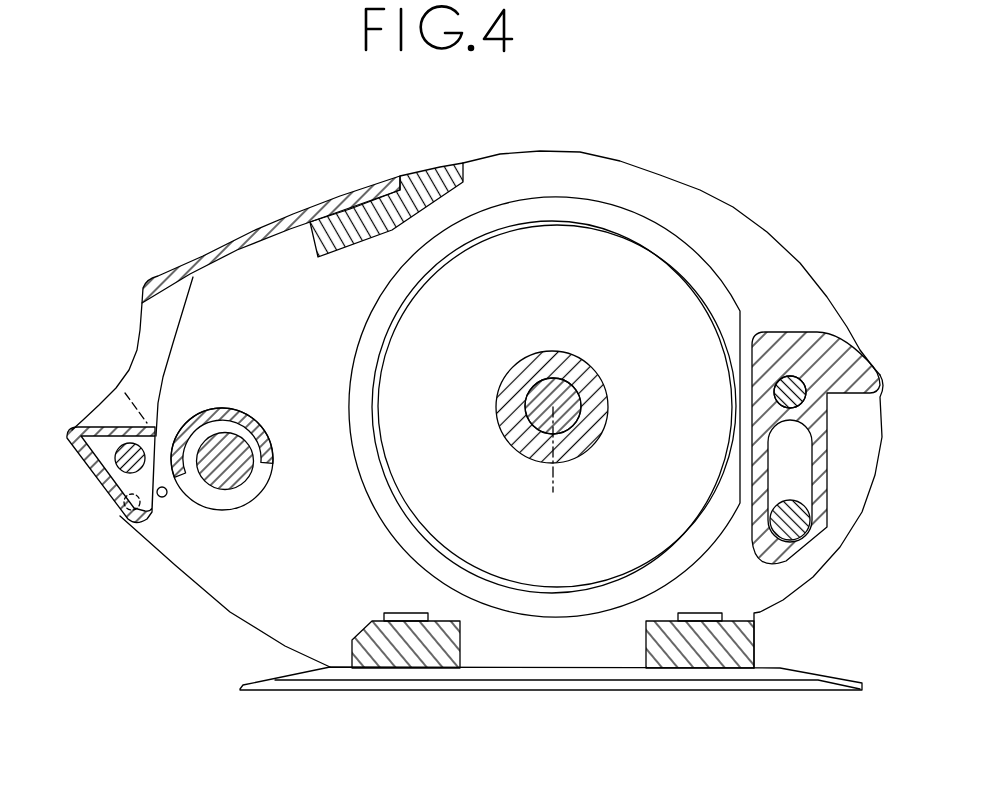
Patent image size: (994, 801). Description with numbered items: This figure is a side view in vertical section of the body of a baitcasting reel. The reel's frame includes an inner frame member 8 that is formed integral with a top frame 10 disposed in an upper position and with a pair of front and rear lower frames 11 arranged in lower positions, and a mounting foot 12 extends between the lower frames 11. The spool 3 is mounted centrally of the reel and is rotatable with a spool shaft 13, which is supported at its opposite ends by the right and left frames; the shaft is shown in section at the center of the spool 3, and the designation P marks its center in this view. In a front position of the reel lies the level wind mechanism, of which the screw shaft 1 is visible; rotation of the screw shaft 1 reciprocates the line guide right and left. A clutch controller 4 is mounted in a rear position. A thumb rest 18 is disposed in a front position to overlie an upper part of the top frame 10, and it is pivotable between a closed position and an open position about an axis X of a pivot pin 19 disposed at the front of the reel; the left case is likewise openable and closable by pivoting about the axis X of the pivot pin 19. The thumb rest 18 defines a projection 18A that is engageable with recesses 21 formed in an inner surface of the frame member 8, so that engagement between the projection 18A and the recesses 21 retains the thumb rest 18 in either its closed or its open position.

The screw shaft 1 is at (235, 471).
The spool 3 is at (430, 492).
The clutch controller 4 is at (798, 340).
The inner frame member 8 is at (725, 233).
The top frame 10 is at (433, 185).
The lower frames 11 is at (352, 640).
The mounting foot 12 is at (817, 680).
The spool shaft 13 is at (570, 390).
The thumb rest 18 is at (245, 235).
The projection 18A is at (195, 388).
The pivot pin 19 is at (121, 469).
The recesses 21 is at (165, 496).
The axis P is at (566, 473).
The axis X is at (171, 379).